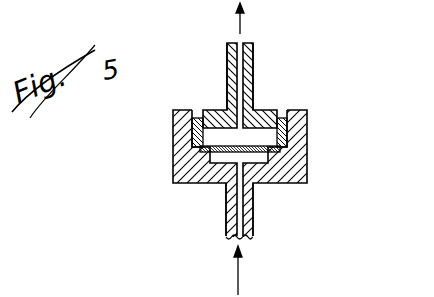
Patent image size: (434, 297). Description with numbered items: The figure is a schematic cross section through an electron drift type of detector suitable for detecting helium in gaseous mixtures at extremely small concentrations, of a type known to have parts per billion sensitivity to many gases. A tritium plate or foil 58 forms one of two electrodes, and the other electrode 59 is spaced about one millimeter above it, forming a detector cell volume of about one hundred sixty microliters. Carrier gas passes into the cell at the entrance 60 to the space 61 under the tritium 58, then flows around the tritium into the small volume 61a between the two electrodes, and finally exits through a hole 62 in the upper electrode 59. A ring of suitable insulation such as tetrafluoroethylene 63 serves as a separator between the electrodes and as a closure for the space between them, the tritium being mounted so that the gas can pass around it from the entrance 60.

The tritium plate or foil 58 is at (258, 185).
The upper electrode 59 is at (262, 109).
The entrance 60 is at (254, 228).
The space under the tritium 61 is at (222, 184).
The small volume between the two electrodes 61a is at (273, 133).
The hole in the upper electrode 62 is at (248, 59).
The ring of insulation 63 is at (209, 86).